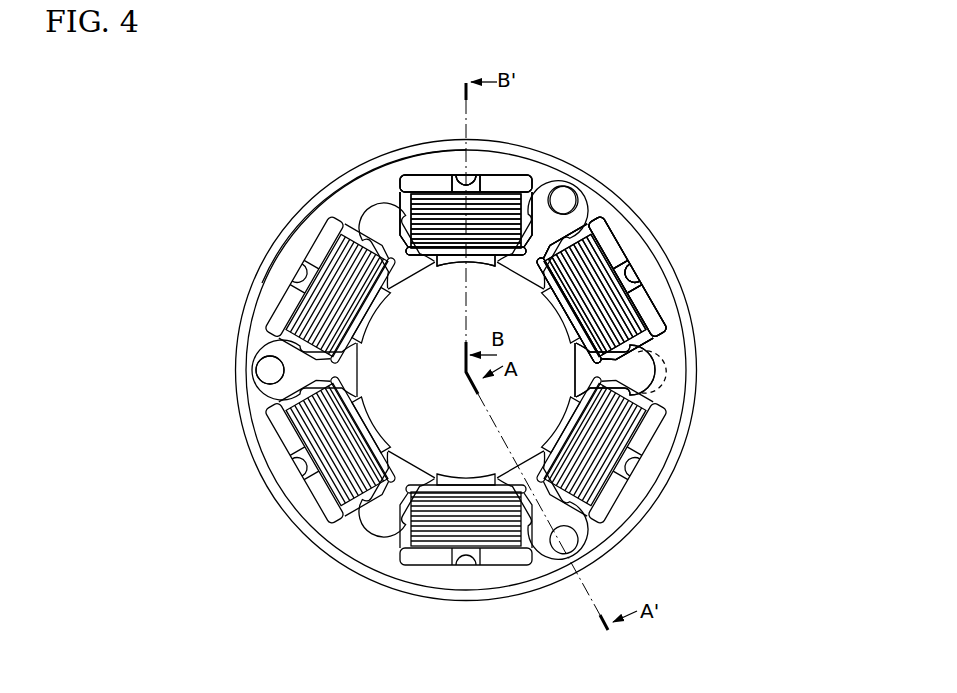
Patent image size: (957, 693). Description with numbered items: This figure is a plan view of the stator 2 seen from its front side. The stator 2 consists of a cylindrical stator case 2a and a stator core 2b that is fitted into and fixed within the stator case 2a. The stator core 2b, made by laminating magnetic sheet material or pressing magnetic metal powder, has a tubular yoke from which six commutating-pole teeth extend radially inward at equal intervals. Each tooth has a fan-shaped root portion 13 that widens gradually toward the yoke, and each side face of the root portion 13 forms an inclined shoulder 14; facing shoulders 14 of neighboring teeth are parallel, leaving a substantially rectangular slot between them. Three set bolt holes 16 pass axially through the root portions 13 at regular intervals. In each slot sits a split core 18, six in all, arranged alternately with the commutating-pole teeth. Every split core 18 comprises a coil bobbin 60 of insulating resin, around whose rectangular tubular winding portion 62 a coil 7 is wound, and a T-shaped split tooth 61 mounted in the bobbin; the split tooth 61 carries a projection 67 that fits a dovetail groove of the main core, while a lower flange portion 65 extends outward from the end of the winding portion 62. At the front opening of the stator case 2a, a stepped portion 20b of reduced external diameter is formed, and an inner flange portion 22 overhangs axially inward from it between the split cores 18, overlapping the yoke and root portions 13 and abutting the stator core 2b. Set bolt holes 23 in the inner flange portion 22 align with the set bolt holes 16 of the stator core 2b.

The stator 2 is at (608, 82).
The stator case 2a is at (559, 151).
The stator core 2b is at (573, 246).
The coil 7 is at (399, 207).
The root portion 13 is at (662, 381).
The inclined shoulder 14 is at (633, 324).
The set bolt hole 16 is at (562, 200).
The split core 18 is at (600, 292).
The stepped portion 20b is at (262, 283).
The inner flange portion 22 is at (661, 294).
The set bolt hole 23 is at (258, 371).
The coil bobbin 60 is at (619, 247).
The split tooth 61 is at (438, 268).
The winding portion 62 is at (466, 215).
The lower flange portion 65 is at (412, 250).
The projection 67 is at (628, 276).